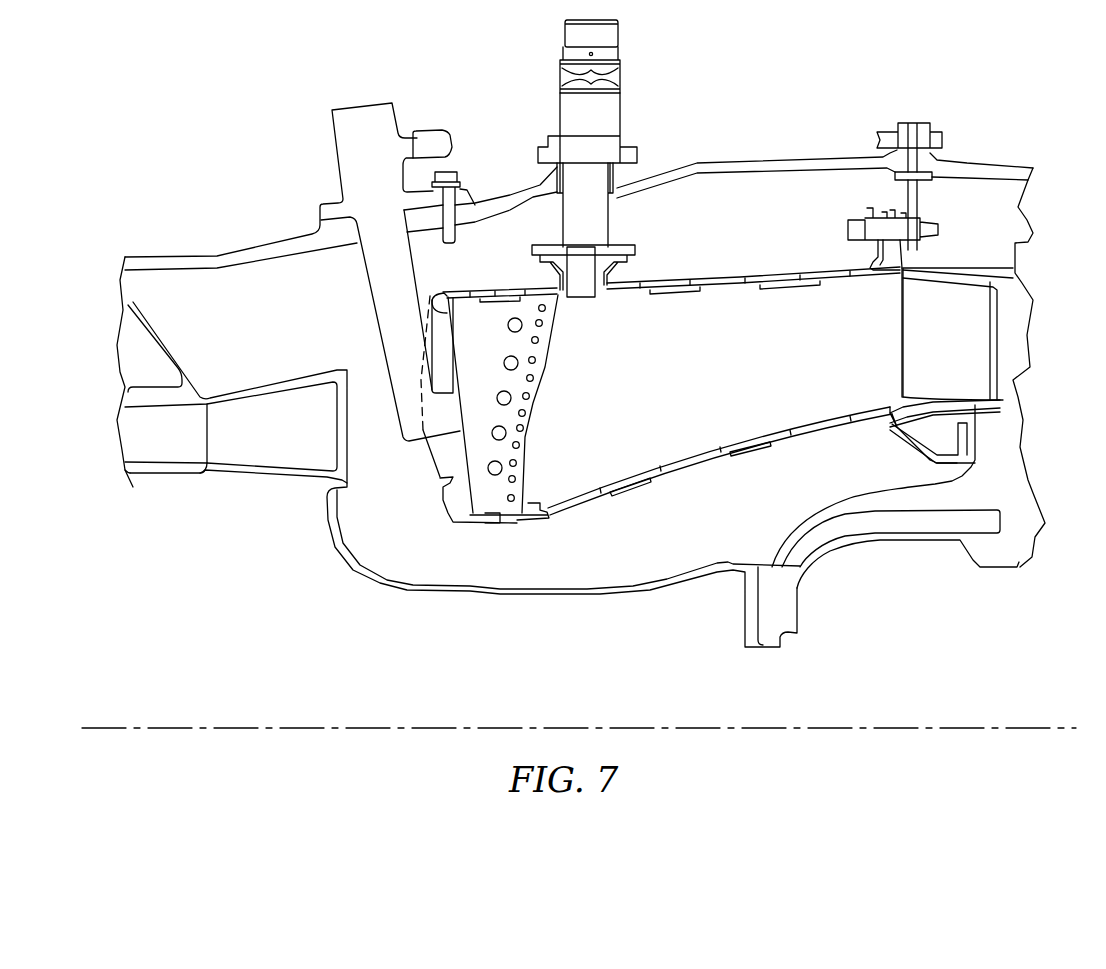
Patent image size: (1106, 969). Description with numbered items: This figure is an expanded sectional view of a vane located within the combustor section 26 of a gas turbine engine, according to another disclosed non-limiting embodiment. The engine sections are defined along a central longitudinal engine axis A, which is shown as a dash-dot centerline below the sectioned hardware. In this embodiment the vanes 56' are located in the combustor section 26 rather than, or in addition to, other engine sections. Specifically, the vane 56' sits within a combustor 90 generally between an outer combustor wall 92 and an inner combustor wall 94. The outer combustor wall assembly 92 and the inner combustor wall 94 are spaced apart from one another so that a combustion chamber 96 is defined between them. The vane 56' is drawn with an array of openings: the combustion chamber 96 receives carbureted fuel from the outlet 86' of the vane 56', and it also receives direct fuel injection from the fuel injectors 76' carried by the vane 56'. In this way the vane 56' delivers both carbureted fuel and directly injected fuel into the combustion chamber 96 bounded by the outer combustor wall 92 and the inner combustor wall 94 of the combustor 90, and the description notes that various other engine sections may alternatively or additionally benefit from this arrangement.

The combustor section 26 is at (795, 114).
The vane 56' is at (529, 374).
The fuel injector 76' is at (563, 403).
The outlet 86' is at (547, 396).
The combustor 90 is at (757, 270).
The outer combustor wall 92 is at (733, 281).
The inner combustor wall 94 is at (640, 483).
The combustion chamber 96 is at (772, 384).
The central longitudinal engine axis A is at (434, 727).